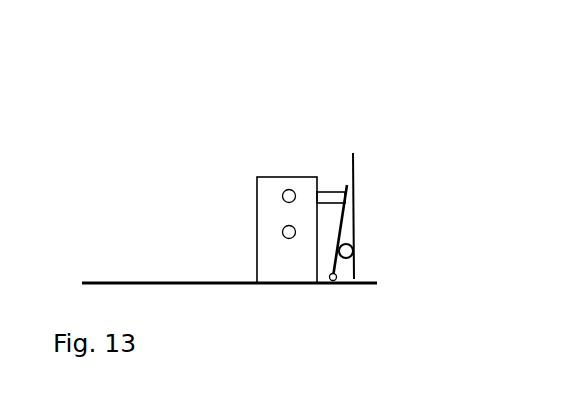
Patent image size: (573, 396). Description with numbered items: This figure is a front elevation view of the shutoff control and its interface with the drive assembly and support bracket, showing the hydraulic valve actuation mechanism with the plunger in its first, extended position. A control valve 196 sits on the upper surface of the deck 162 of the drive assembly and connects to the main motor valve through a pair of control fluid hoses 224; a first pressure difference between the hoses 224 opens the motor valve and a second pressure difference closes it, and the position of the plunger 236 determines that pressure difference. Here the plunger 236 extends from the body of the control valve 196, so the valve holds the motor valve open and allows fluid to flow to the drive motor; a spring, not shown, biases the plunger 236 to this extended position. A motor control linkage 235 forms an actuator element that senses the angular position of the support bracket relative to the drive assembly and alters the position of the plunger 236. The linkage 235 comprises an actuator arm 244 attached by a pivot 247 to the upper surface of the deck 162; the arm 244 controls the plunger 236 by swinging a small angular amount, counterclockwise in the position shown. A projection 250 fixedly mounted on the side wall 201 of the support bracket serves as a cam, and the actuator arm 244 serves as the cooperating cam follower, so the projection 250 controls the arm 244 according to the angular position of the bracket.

The deck 162 is at (176, 282).
The control valve 196 is at (259, 237).
The control fluid hoses 224 is at (286, 226).
The plunger 236 is at (332, 192).
The side wall 201 is at (354, 157).
The motor control linkage 235 is at (367, 242).
The actuator arm 244 is at (340, 225).
The pivot 247 is at (330, 280).
The projection 250 is at (347, 258).